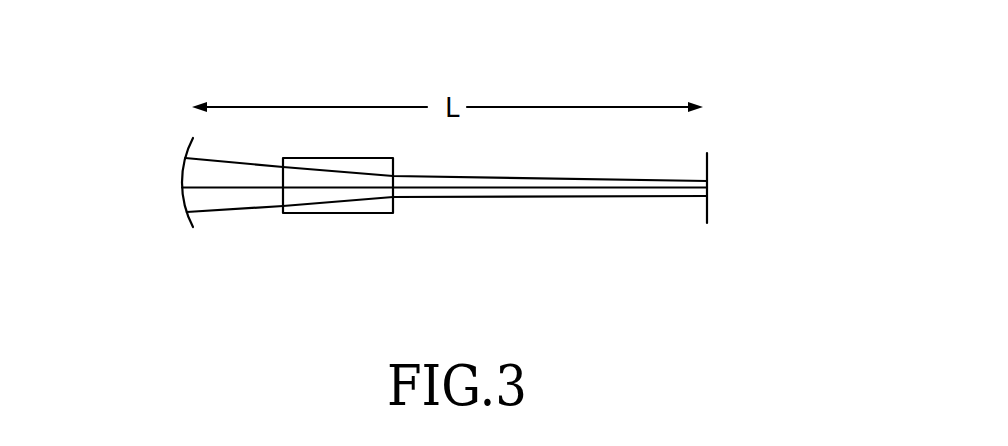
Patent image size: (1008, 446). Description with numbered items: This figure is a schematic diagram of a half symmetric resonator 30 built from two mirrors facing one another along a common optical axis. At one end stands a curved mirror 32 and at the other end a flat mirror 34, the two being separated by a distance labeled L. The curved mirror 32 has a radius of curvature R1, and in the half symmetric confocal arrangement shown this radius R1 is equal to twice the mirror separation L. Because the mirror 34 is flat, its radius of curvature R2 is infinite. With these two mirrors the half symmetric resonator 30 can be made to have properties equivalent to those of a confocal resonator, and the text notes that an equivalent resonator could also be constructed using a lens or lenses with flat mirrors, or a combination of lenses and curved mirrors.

The half symmetric resonator 30 is at (545, 219).
The curved mirror 32 is at (166, 207).
The flat mirror 34 is at (724, 195).
The radius of curvature of the curved mirror R1 is at (178, 148).
The radius of curvature of the flat mirror R2 is at (712, 163).